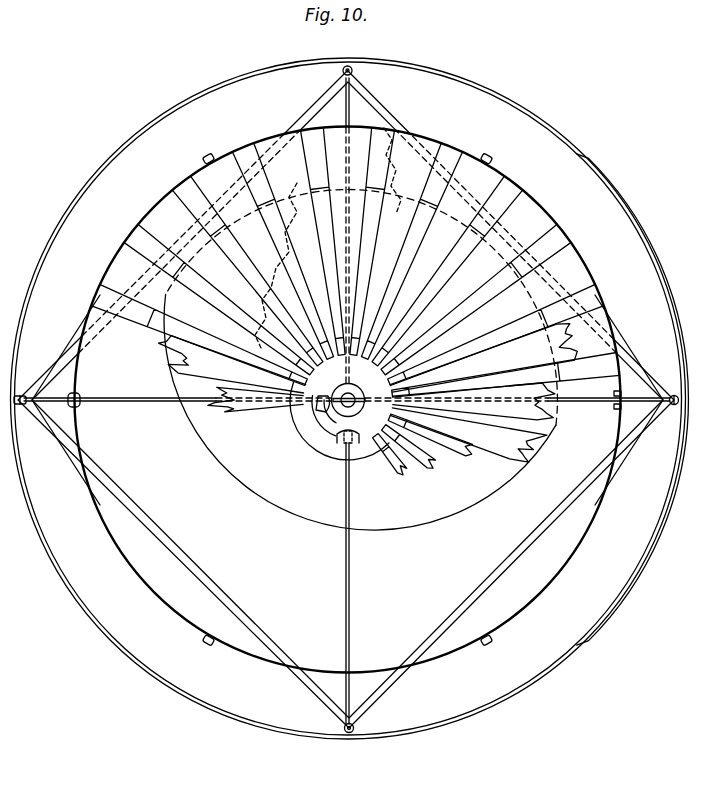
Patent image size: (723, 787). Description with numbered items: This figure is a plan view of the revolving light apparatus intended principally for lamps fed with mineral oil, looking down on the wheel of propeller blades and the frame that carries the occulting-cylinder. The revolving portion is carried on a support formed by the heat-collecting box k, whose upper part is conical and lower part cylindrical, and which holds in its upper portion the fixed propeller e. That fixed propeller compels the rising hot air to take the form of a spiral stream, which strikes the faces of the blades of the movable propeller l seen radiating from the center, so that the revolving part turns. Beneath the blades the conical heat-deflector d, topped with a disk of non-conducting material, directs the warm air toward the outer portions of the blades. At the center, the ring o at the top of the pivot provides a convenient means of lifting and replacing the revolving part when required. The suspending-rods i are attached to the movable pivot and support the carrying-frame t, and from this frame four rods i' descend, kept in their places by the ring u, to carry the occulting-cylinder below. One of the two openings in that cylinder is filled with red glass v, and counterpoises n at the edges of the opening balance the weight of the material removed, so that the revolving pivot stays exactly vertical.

The ring u is at (348, 398).
The red glass v is at (348, 398).
The movable propeller l is at (355, 301).
The ring o is at (349, 399).
The heat-deflector d is at (336, 421).
The suspending-rods i is at (352, 583).
The rods i' is at (348, 741).
The heat-collecting box k is at (177, 420).
The fixed propeller e is at (517, 406).
The carrying-frame t is at (346, 397).
The counterpoises n is at (672, 510).